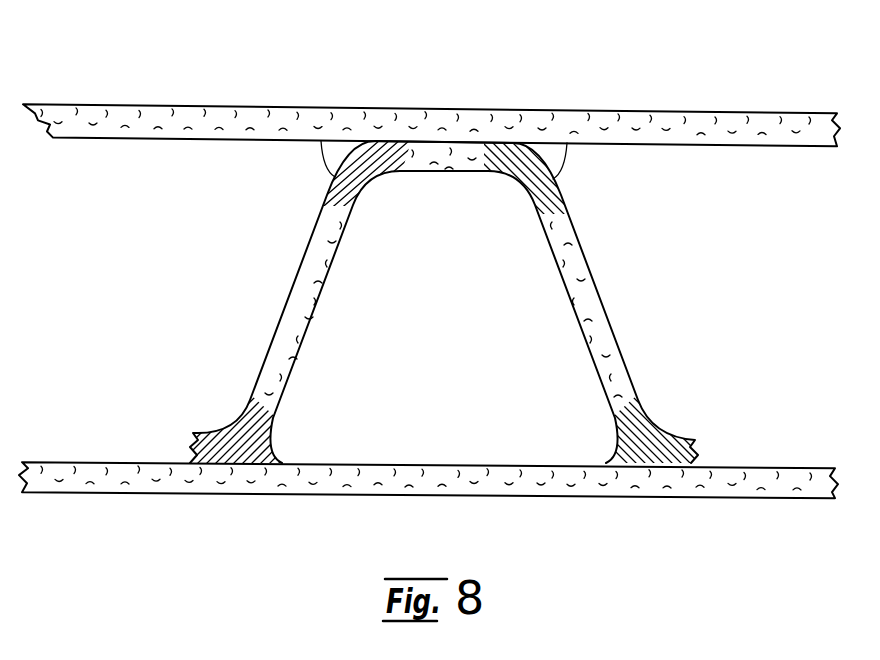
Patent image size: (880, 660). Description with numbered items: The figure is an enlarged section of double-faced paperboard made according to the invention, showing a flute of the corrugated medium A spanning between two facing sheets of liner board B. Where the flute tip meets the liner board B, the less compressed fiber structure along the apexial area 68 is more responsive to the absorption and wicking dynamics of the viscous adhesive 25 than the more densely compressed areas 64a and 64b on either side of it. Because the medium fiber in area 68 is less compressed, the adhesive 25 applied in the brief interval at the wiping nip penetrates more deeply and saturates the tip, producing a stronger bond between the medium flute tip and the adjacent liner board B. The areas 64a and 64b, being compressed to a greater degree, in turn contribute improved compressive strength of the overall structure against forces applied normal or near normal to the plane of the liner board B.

The liner board B is at (633, 112).
The trapezoidal stiffener (hat section) A is at (609, 310).
The more densely compressed area 64b is at (368, 182).
The more densely compressed area 64a is at (524, 176).
The apexial area 68 is at (451, 173).
The adhesive 25 is at (337, 155).